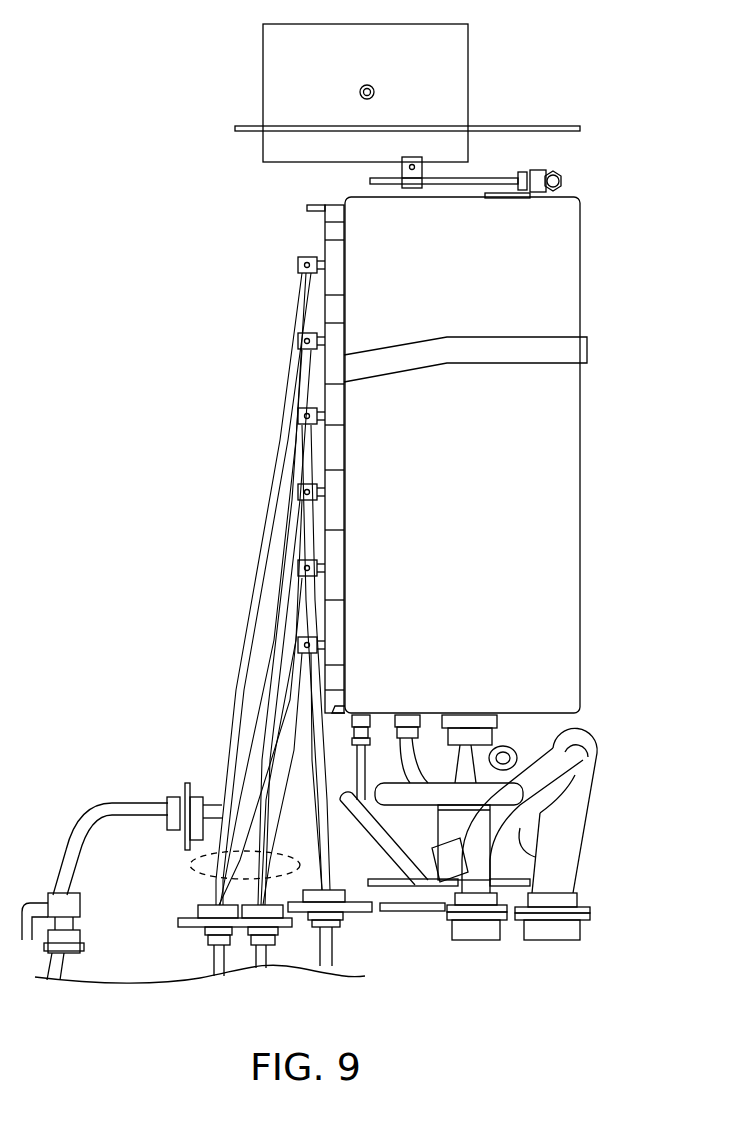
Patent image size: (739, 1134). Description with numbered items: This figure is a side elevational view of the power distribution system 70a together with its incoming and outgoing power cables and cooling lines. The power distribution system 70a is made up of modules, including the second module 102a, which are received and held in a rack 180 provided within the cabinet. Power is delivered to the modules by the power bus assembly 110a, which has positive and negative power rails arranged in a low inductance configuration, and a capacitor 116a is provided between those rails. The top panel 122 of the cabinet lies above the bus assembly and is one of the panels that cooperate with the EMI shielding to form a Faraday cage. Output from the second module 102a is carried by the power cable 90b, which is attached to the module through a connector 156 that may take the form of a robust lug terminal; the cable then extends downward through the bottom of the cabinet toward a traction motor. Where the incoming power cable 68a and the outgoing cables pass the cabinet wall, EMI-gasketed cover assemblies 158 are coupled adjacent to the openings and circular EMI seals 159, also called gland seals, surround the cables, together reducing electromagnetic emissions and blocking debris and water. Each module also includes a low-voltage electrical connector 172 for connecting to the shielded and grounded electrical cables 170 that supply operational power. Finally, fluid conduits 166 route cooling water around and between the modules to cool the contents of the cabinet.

The capacitor 116a is at (455, 55).
The power bus assembly 110a is at (503, 157).
The top panel 122 is at (585, 127).
The power distribution system 70a is at (622, 290).
The rack 180 is at (575, 350).
The connector 156 is at (302, 418).
The second module 102a is at (565, 575).
The low-voltage electrical connector 172 is at (495, 730).
The electrical cable 170 is at (560, 830).
The power cable 68a is at (96, 808).
The EMI seal 159 is at (170, 800).
The EMI-gasketed cover assembly 158 is at (190, 785).
The power cable 90b is at (195, 868).
The fluid conduit 166 is at (398, 858).